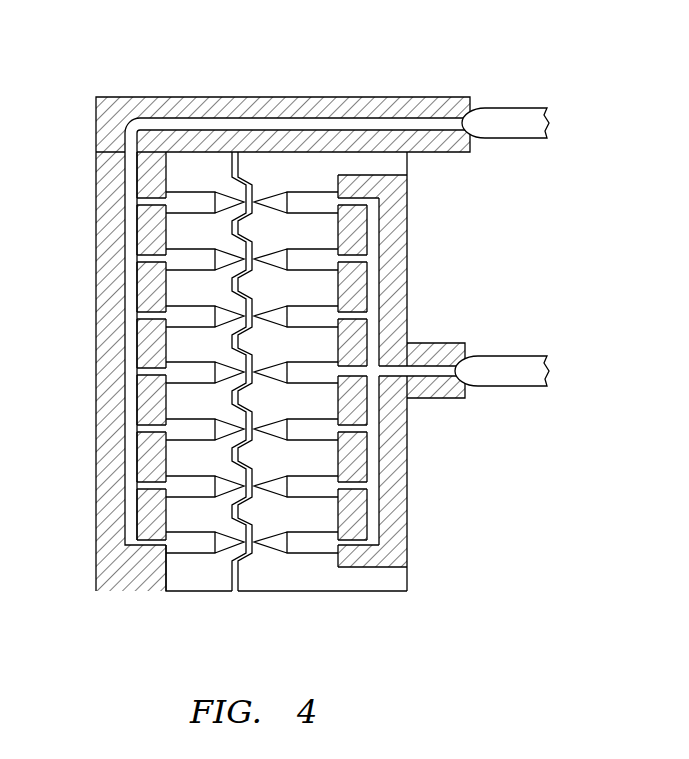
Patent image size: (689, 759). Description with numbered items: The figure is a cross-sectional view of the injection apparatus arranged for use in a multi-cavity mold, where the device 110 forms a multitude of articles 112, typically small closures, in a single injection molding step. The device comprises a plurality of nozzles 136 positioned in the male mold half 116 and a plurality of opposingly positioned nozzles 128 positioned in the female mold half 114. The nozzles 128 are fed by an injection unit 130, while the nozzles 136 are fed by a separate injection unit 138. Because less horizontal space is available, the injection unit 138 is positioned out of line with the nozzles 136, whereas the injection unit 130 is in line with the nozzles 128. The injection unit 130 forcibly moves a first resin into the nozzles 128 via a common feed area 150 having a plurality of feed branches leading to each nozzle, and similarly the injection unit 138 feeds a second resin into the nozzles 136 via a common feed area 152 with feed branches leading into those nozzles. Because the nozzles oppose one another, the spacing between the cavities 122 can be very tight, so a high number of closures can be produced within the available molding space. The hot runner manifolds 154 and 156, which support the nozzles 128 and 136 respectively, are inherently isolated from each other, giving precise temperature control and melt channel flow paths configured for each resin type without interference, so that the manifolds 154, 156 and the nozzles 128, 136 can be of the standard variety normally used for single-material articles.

The device 110 is at (294, 89).
The articles 112 is at (247, 183).
The female mold half 114 is at (315, 592).
The male mold half 116 is at (200, 592).
The cavities 122 is at (350, 452).
The nozzles 128 is at (318, 195).
The injection unit 130 is at (510, 368).
The nozzles 136 is at (192, 197).
The injection unit 138 is at (517, 132).
The common feed area 150 is at (400, 275).
The common feed area 152 is at (112, 320).
The hot runner manifold 154 is at (400, 548).
The hot runner manifold 156 is at (108, 558).